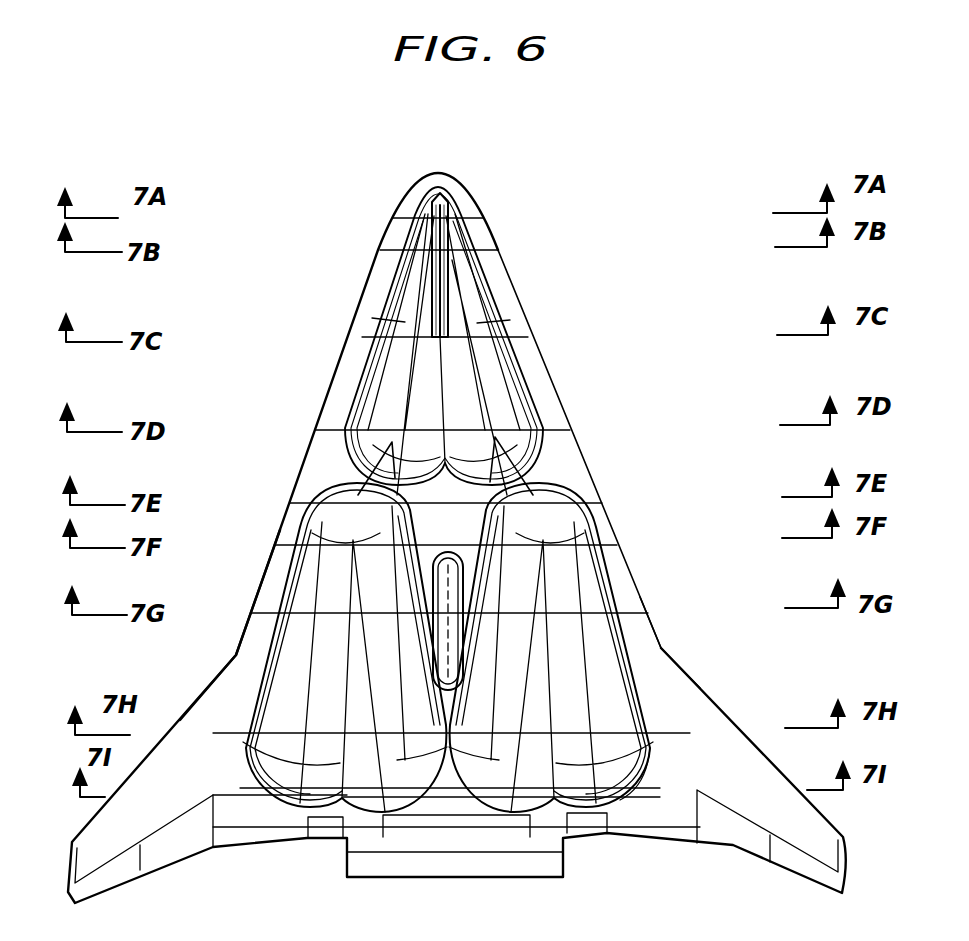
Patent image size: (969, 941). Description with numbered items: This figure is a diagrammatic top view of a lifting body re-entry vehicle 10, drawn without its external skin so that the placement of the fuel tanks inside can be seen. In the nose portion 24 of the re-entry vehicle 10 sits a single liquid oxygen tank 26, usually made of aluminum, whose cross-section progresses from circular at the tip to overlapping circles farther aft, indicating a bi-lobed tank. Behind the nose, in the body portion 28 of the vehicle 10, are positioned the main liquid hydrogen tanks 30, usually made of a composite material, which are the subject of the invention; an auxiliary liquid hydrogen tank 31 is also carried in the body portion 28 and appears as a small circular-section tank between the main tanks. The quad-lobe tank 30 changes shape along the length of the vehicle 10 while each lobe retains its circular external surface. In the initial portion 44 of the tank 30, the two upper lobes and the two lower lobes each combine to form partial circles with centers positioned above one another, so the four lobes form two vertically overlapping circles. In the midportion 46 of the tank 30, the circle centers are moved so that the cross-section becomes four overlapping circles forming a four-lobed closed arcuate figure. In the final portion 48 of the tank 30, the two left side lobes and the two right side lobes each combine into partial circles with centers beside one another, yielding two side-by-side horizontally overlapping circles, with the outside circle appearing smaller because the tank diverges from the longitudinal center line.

The re-entry vehicle 10 is at (566, 363).
The nose portion 24 is at (350, 291).
The liquid oxygen tank 26 is at (503, 278).
The body portion 28 is at (228, 652).
The main liquid hydrogen tank 30 is at (260, 693).
The auxiliary liquid hydrogen tank 31 is at (430, 583).
The initial portion of the tank 44 is at (602, 467).
The midportion of the tank 46 is at (669, 633).
The final portion of the tank 48 is at (680, 758).